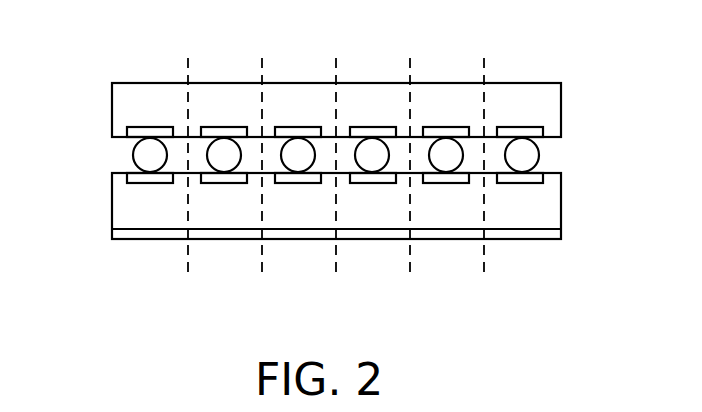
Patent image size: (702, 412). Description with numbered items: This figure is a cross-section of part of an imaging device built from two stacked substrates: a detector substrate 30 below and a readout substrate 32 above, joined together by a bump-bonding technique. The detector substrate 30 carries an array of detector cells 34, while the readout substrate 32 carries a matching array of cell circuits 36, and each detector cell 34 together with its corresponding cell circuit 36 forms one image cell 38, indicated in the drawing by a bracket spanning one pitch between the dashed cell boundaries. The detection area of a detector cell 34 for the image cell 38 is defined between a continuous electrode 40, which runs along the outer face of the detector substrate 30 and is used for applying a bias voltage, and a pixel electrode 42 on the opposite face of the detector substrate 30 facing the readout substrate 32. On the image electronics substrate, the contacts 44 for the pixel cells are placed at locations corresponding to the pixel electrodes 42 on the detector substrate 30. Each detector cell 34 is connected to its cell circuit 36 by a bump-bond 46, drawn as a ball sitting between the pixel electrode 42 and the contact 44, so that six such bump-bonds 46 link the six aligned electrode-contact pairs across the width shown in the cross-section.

The detector substrate 30 is at (101, 170).
The readout substrate 32 is at (101, 83).
The detector cell 34 is at (221, 203).
The cell circuit 36 is at (212, 100).
The image cell 38 is at (338, 275).
The continuous electrode 40 is at (533, 239).
The pixel electrode 42 is at (380, 185).
The contact 44 is at (370, 127).
The bump-bond 46 is at (540, 157).